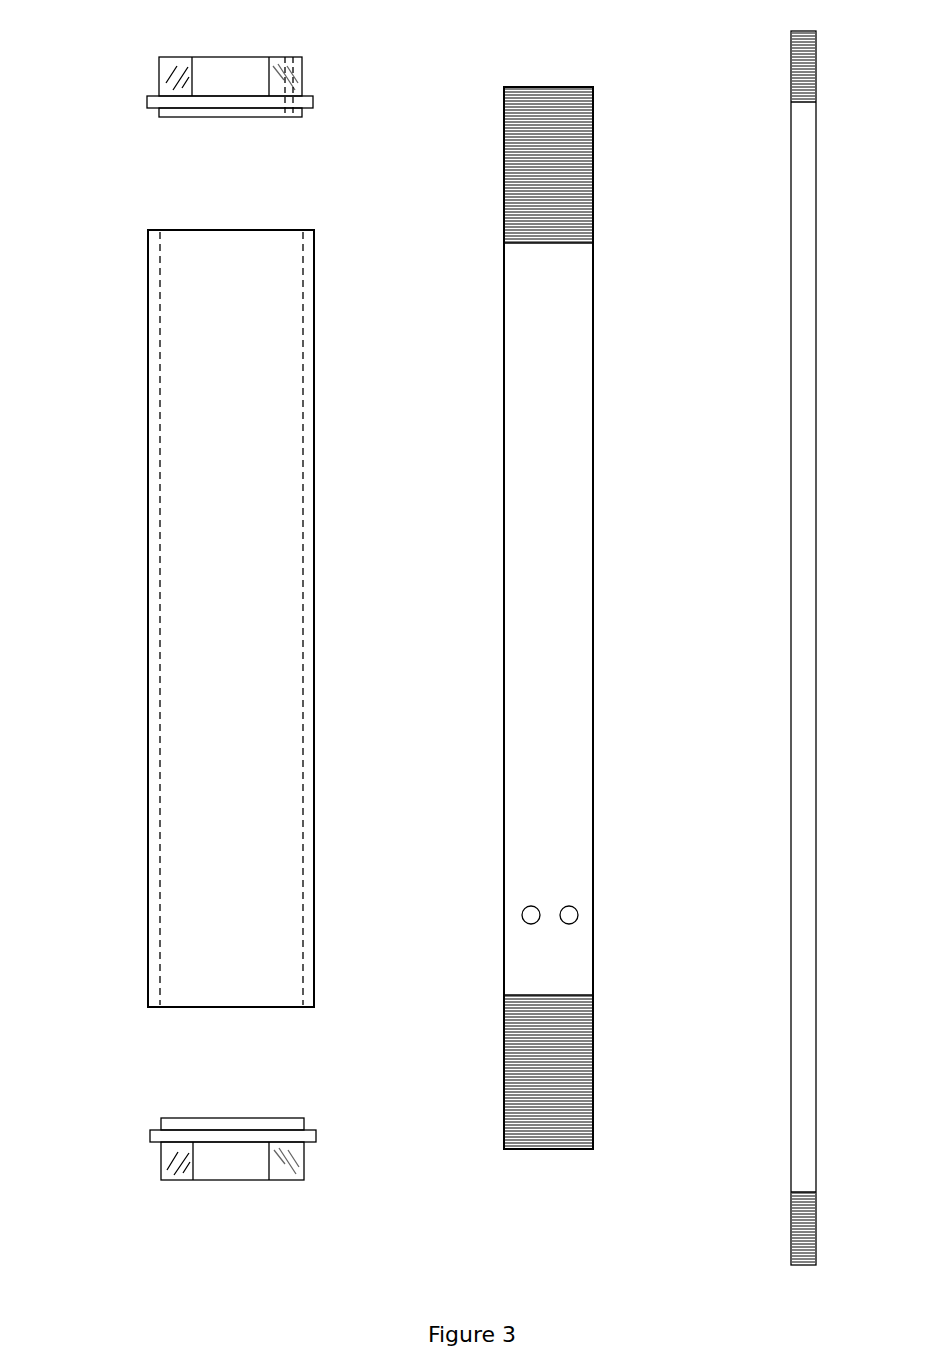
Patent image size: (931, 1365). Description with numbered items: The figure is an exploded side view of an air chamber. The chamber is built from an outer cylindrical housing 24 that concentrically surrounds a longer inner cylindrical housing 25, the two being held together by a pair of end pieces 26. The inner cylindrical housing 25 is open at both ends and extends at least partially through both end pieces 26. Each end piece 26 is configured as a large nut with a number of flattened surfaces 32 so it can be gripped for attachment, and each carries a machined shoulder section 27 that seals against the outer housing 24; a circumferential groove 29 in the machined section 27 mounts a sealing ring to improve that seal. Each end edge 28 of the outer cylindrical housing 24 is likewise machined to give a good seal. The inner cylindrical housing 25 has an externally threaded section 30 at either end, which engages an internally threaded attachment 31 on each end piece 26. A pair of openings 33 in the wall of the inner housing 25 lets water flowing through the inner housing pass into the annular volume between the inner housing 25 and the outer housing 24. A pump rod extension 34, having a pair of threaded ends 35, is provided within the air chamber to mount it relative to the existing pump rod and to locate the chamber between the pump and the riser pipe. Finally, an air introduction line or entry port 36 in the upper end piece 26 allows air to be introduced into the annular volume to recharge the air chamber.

The outer cylindrical housing 24 is at (205, 556).
The inner cylindrical housing 25 is at (602, 490).
The end pieces 26 is at (221, 626).
The machined shoulder section 27 is at (314, 103).
The end edge 28 is at (148, 231).
The circumferential groove 29 is at (158, 108).
The externally threaded section 30 is at (577, 150).
The internally threaded attachment 31 is at (230, 75).
The flattened surfaces 32 is at (159, 73).
The openings 33 is at (576, 905).
The pump rod extension 34 is at (790, 439).
The threaded ends 35 is at (786, 72).
The air introduction line or entry port 36 is at (295, 74).